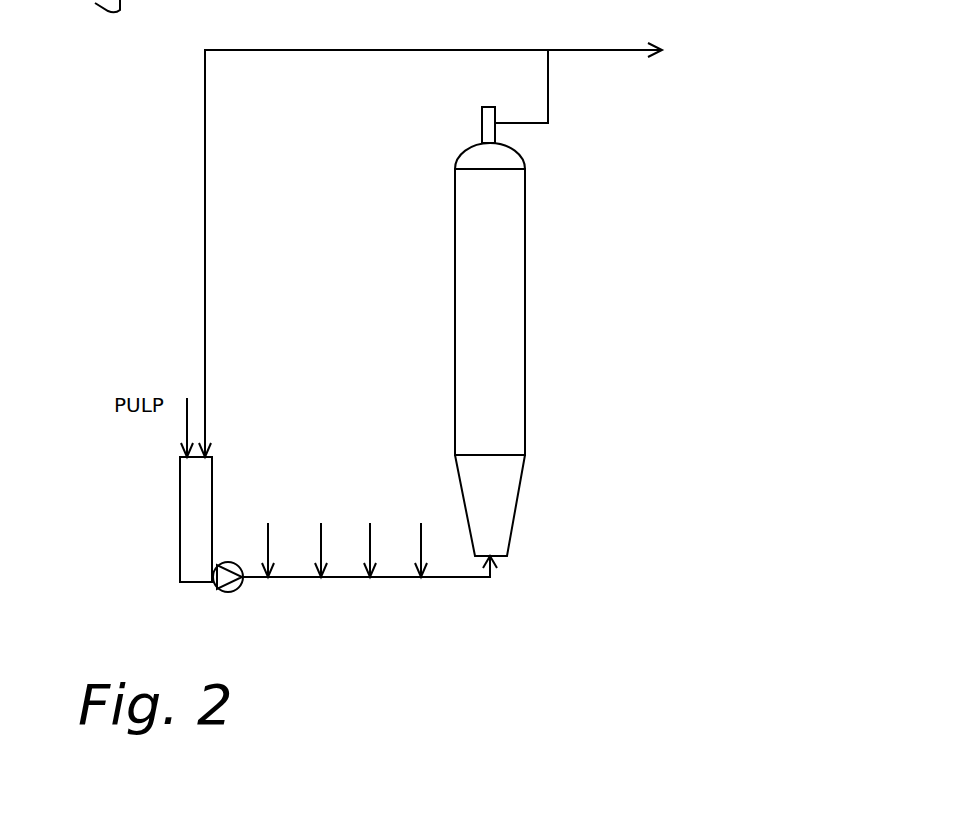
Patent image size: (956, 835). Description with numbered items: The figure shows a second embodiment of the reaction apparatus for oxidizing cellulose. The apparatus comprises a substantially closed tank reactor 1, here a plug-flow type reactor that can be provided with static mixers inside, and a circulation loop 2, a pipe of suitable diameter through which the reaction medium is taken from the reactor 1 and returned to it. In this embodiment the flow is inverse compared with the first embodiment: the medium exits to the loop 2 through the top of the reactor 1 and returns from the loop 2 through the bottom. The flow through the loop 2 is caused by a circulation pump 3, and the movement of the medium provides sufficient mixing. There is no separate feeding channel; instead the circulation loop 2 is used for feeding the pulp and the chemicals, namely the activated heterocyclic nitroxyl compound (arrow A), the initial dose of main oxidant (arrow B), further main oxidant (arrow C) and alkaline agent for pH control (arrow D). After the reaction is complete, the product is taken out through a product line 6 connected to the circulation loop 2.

The tank reactor 1 is at (510, 330).
The circulation loop 2 is at (348, 50).
The circulation pump 3 is at (235, 591).
The product line 6 is at (608, 50).
The arrow A is at (267, 531).
The arrow B is at (321, 531).
The arrow C is at (368, 531).
The arrow D is at (422, 531).